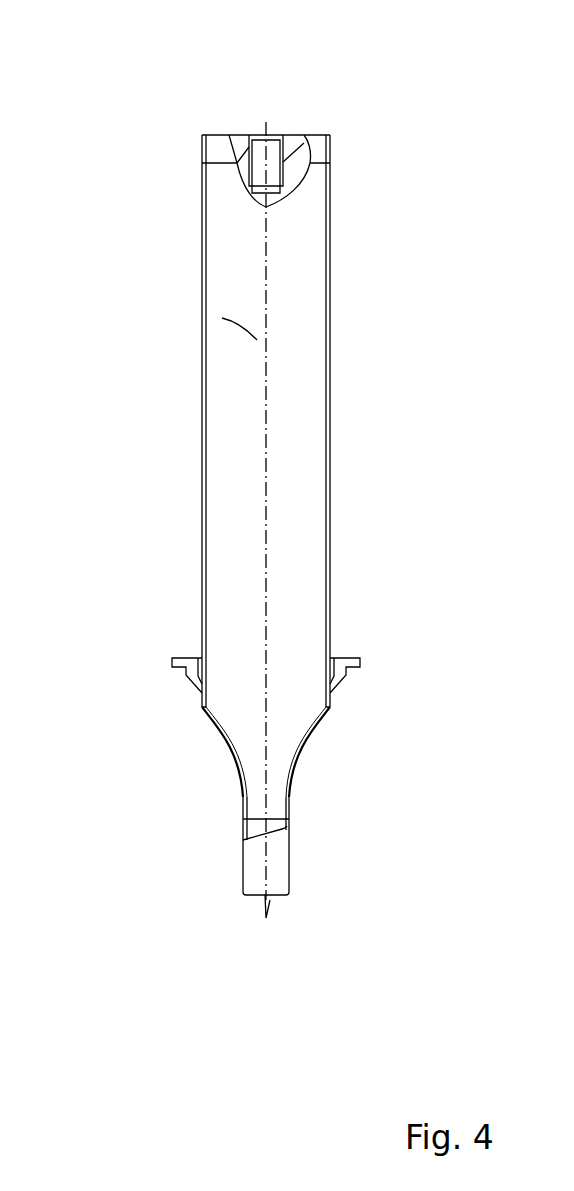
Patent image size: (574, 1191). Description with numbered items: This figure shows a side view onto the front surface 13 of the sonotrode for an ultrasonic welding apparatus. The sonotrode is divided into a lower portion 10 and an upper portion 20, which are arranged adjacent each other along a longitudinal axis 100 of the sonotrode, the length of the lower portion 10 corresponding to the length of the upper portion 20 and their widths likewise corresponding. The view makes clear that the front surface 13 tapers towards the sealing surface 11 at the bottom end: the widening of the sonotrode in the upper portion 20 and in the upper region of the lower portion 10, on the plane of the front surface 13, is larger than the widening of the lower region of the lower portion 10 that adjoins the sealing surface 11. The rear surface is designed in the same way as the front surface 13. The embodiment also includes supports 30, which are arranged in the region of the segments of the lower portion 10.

The longitudinal axis 100 is at (261, 488).
The lower portion 10 is at (232, 557).
The sealing surface 11 is at (263, 903).
The front surface 13 is at (257, 340).
The upper portion 20 is at (305, 273).
The supports 30 is at (190, 683).